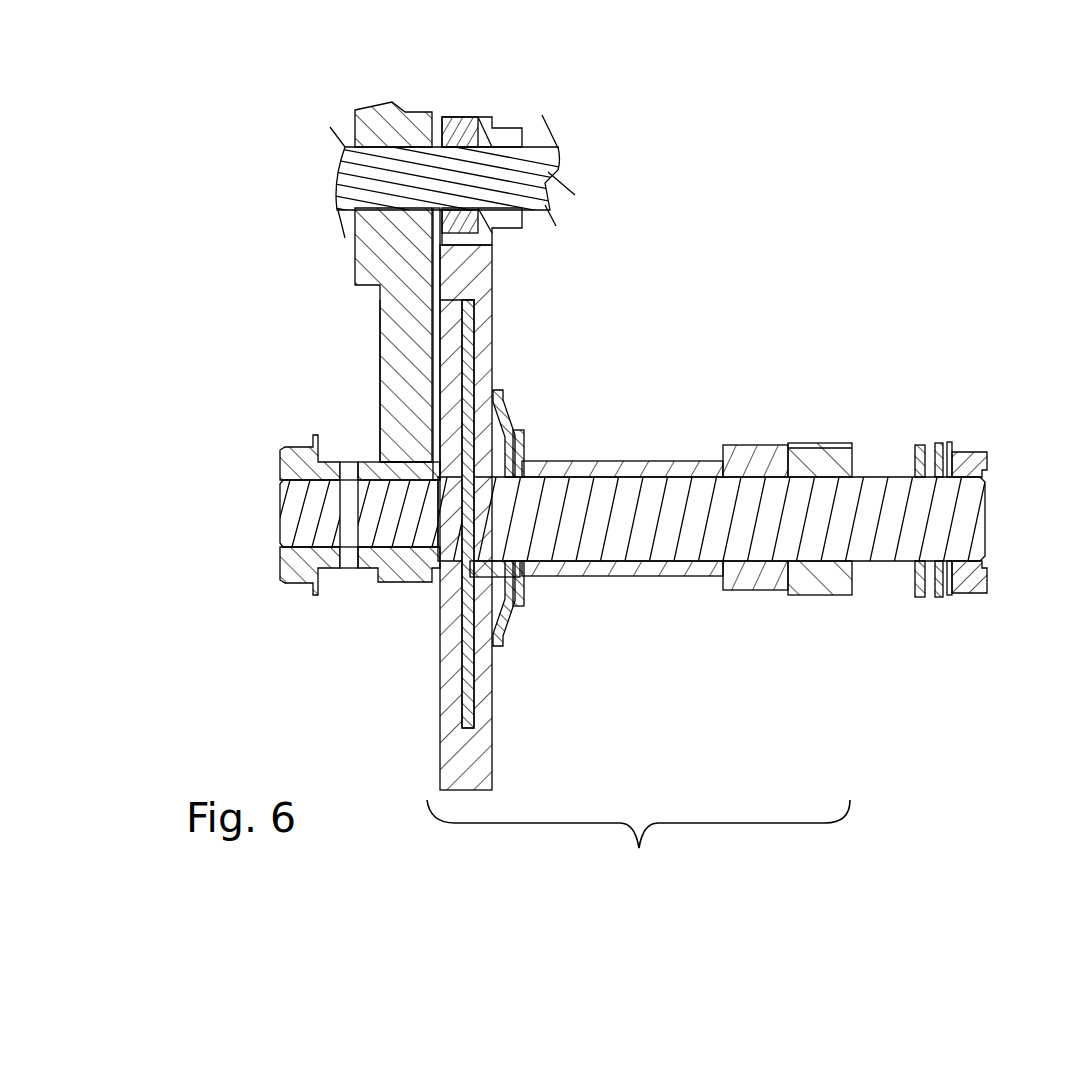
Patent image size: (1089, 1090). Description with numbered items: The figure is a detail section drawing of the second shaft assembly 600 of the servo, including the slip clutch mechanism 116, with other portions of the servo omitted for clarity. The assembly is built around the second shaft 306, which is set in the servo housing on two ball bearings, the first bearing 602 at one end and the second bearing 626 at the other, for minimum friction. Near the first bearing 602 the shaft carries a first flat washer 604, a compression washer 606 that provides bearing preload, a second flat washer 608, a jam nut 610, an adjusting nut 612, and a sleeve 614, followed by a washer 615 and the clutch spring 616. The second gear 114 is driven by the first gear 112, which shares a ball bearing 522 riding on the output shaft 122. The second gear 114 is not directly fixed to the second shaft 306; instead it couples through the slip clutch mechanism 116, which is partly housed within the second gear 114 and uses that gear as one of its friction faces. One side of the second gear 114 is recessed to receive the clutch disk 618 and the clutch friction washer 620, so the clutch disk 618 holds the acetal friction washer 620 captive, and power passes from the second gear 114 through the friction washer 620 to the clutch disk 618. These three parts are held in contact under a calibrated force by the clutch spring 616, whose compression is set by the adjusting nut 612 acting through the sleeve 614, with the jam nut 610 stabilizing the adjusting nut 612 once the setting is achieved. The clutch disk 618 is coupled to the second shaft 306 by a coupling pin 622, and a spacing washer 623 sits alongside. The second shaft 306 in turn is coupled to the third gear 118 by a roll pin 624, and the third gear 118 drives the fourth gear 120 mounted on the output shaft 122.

The second shaft assembly 600 is at (183, 266).
The slip clutch mechanism 116 is at (706, 688).
The second shaft 306 is at (283, 518).
The second bearing 626 is at (283, 452).
The third gear 118 is at (363, 575).
The roll pin 624 is at (350, 455).
The spacing washer 623 is at (398, 590).
The clutch disk 618 is at (412, 333).
The fourth gear 120 is at (382, 390).
The output shaft 122 is at (512, 178).
The ball bearing 522 is at (478, 132).
The first gear 112 is at (525, 228).
The second gear 114 is at (478, 330).
The clutch friction washer 620 is at (472, 335).
The clutch spring 616 is at (508, 415).
The washer 615 is at (530, 450).
The coupling pin 622 is at (445, 595).
The sleeve 614 is at (658, 461).
The adjusting nut 612 is at (745, 445).
The jam nut 610 is at (838, 443).
The second flat washer 608 is at (918, 600).
The compression washer 606 is at (937, 600).
The first flat washer 604 is at (950, 600).
The first bearing 602 is at (977, 452).